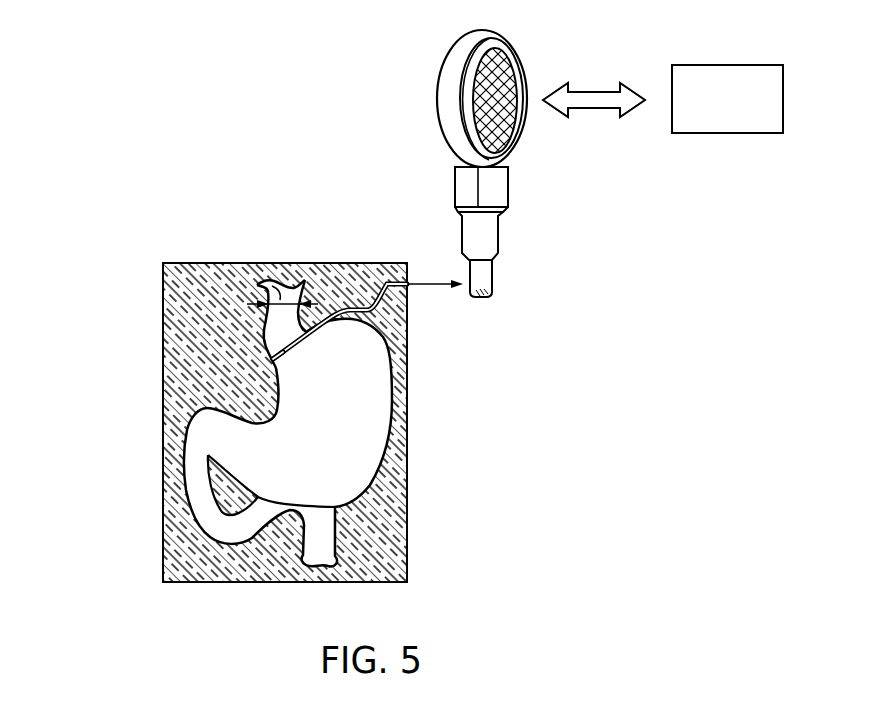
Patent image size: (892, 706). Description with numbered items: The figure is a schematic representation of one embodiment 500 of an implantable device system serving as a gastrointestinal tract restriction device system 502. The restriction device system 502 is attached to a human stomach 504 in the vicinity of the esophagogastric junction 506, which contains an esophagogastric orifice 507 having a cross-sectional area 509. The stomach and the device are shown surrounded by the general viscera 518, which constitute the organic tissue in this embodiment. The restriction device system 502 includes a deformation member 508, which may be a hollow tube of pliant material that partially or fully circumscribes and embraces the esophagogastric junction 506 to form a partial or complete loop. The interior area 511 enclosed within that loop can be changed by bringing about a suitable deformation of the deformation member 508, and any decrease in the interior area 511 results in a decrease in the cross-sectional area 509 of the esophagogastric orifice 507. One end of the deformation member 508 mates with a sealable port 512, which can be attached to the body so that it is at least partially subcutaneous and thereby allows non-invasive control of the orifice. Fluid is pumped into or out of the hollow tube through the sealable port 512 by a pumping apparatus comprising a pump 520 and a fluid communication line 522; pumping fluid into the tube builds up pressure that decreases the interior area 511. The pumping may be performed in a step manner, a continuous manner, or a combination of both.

The embodiment of the invention 500 is at (123, 41).
The gastrointestinal tract restriction device system 502 is at (368, 318).
The human stomach 504 is at (382, 433).
The esophagogastric junction 506 is at (248, 342).
The esophagogastric orifice 507 is at (273, 270).
The deformation member 508 is at (290, 350).
The cross-sectional area 509 is at (257, 286).
The interior area 511 is at (313, 352).
The sealable port 512 is at (538, 40).
The general viscera 518 is at (397, 545).
The pump 520 is at (734, 133).
The fluid communication line 522 is at (593, 104).